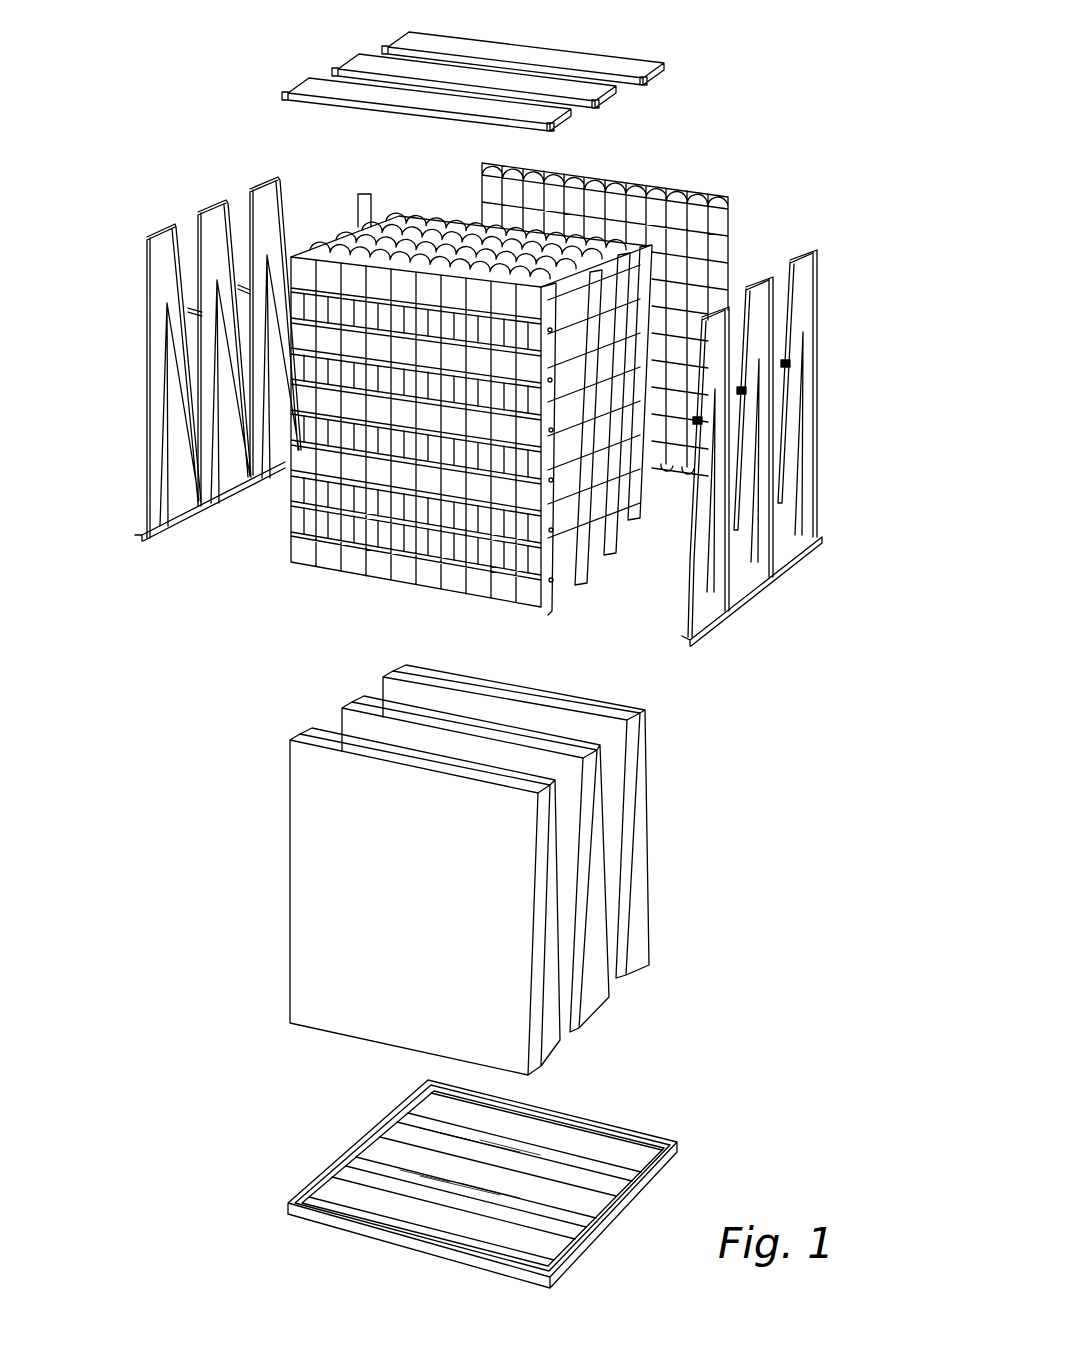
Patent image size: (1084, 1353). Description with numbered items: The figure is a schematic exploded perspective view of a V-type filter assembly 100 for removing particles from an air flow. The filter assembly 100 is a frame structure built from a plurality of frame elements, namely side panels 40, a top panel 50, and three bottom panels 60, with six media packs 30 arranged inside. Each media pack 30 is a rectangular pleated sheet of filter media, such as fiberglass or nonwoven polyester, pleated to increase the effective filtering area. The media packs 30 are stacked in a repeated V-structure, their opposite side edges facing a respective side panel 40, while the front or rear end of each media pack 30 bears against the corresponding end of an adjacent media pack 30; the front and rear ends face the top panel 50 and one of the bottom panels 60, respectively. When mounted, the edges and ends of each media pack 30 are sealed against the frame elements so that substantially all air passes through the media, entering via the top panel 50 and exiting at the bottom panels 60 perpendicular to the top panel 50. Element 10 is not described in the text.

The filter assembly 100 is at (181, 53).
The rack 10 is at (297, 546).
The media packs 30 is at (590, 1068).
The side panels 40 is at (157, 400).
The top panel 50 is at (677, 1142).
The bottom panels 60 is at (578, 120).